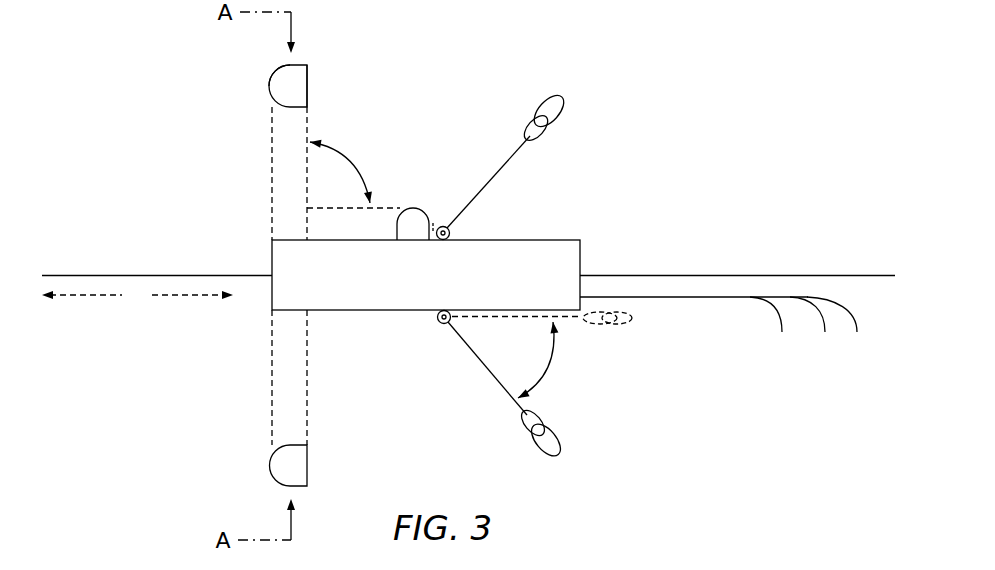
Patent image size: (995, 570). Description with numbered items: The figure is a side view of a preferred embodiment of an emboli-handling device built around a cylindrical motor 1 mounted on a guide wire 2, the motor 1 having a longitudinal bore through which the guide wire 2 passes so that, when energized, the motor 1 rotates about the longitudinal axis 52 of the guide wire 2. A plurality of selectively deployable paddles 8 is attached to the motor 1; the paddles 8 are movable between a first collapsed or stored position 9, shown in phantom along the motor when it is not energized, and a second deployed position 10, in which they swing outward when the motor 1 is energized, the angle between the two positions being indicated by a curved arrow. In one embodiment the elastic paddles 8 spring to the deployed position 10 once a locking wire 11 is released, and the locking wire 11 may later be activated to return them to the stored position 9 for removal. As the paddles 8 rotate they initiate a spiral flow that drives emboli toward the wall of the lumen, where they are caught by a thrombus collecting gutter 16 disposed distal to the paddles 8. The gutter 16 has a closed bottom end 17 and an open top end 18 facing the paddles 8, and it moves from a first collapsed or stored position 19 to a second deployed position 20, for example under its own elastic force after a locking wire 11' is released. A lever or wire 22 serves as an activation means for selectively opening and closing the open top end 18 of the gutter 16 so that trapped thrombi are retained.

The motor 1 is at (530, 240).
The guide wire 2 is at (765, 275).
The selectively deployable paddles 8 is at (562, 100).
The first collapsed or stored position 9 is at (542, 329).
The second deployed position 10 is at (538, 366).
The locking wire 11 is at (859, 317).
The locking wire 11' is at (815, 331).
The thrombus collecting gutter 16 is at (302, 64).
The closed bottom end 17 is at (272, 76).
The open top end 18 is at (308, 84).
The first collapsed or stored position 19 is at (370, 208).
The second deployed position 20 is at (341, 159).
The lever or wire 22 is at (771, 331).
The longitudinal axis 52 is at (137, 295).